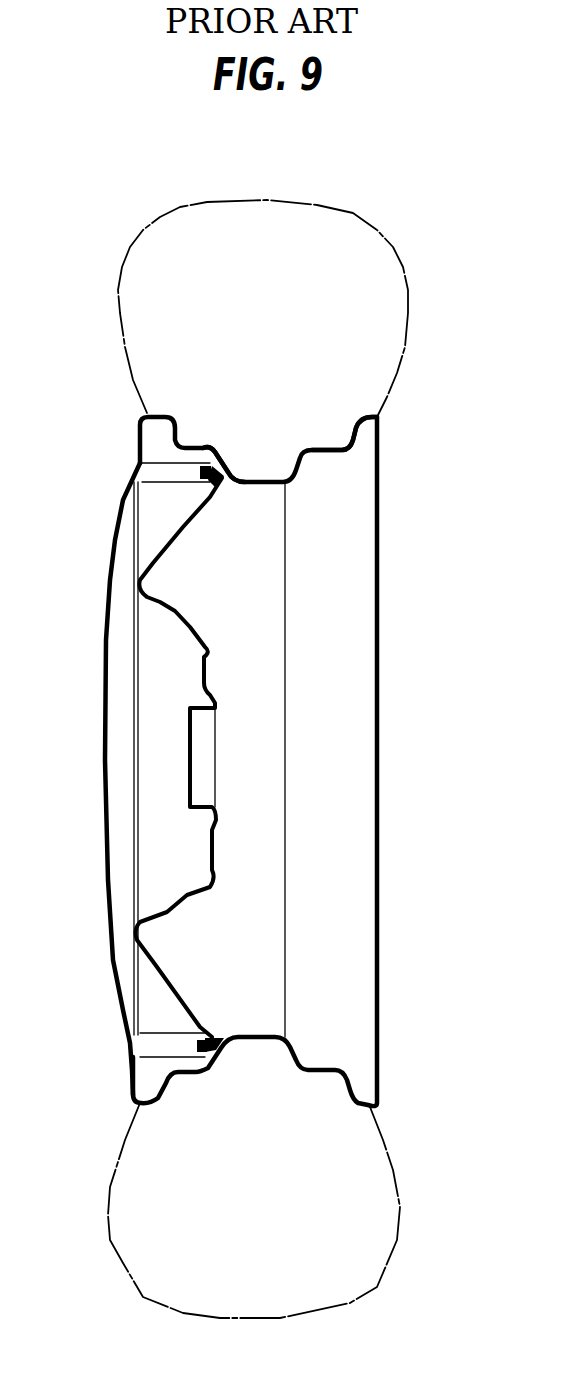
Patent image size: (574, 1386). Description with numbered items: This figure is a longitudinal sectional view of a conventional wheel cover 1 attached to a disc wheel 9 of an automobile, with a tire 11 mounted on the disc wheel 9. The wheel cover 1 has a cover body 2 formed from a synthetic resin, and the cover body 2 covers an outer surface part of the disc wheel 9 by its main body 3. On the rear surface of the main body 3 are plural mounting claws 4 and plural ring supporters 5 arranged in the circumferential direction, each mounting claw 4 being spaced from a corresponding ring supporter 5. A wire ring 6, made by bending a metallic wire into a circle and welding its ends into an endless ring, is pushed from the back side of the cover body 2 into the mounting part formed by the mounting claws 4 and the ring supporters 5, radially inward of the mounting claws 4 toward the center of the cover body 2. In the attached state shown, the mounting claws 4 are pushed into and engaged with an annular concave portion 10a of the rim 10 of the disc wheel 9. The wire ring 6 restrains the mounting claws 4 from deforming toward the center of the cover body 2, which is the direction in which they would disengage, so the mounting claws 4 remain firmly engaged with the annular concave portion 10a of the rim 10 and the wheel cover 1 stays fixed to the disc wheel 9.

The wheel cover 1 is at (92, 674).
The cover body 2 is at (120, 543).
The main body 3 is at (112, 607).
The mounting claw 4 is at (228, 487).
The ring supporter 5 is at (178, 466).
The wire ring 6 is at (198, 497).
The disc wheel 9 is at (379, 752).
The rim 10 is at (318, 446).
The annular concave portion 10a is at (227, 458).
The tire 11 is at (118, 303).